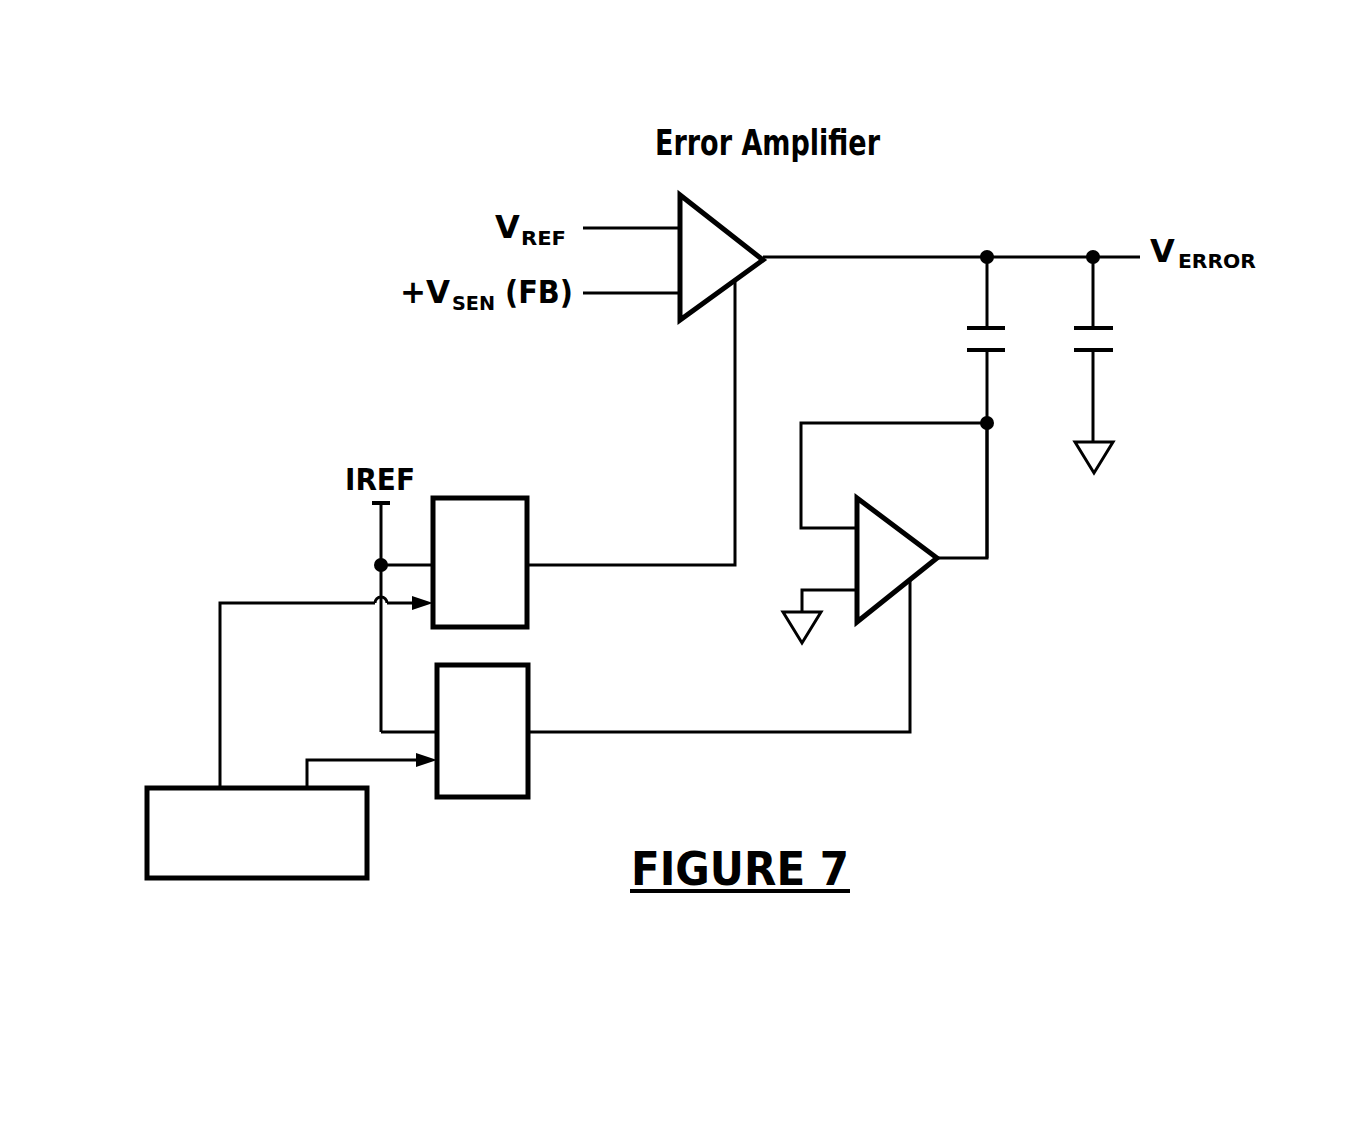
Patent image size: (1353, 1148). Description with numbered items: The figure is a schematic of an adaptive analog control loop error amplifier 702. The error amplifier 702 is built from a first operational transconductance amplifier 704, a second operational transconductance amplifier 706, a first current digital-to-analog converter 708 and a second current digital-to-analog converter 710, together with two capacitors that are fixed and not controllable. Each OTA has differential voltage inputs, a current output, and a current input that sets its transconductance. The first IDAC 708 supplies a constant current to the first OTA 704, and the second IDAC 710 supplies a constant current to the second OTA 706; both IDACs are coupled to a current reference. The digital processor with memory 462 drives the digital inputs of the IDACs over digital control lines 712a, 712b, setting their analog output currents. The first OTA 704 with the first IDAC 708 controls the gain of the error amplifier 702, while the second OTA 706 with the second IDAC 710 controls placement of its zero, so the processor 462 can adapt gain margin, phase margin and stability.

The error amplifier 702 is at (1031, 104).
The first operational transconductance amplifier 704 is at (733, 236).
The second operational transconductance amplifier 706 is at (895, 526).
The first current digital-to-analog converter 708 is at (518, 497).
The second current digital-to-analog converter 710 is at (532, 677).
The first digital control signal 712a is at (251, 602).
The second digital control signal 712b is at (338, 760).
The digital processor with memory 462 is at (176, 787).